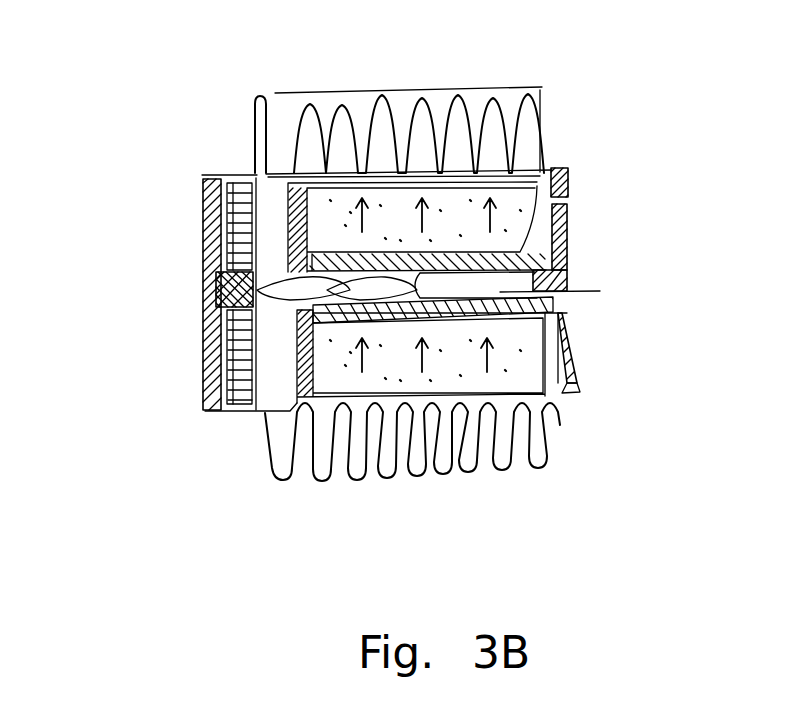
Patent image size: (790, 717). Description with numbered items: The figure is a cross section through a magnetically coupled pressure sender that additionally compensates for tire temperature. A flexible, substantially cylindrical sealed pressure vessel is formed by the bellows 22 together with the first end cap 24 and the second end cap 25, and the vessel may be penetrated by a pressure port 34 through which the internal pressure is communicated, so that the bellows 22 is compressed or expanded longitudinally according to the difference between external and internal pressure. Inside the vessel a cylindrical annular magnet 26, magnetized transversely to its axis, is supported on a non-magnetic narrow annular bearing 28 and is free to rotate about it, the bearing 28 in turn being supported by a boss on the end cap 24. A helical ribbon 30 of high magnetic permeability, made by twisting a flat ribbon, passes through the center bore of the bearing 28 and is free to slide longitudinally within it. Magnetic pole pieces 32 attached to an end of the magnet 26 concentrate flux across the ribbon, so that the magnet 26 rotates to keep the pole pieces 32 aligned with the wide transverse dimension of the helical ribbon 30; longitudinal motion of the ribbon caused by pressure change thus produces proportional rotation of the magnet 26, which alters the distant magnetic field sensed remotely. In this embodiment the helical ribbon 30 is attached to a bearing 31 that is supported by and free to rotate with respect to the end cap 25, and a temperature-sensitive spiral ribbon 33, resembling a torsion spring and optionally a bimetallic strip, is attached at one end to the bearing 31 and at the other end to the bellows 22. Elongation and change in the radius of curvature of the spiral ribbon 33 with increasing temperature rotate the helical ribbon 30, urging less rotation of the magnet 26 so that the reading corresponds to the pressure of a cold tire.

The bellows 22 is at (467, 83).
The first end cap 24 is at (600, 291).
The second end cap 25 is at (210, 400).
The cylindrical annular magnet 26 is at (523, 185).
The annular bearing 28 is at (567, 315).
The helical ribbon 30 is at (360, 300).
The bearing 31 is at (217, 300).
The magnetic pole pieces 32 is at (310, 244).
The spiral ribbon 33 is at (238, 176).
The pressure port 34 is at (573, 193).